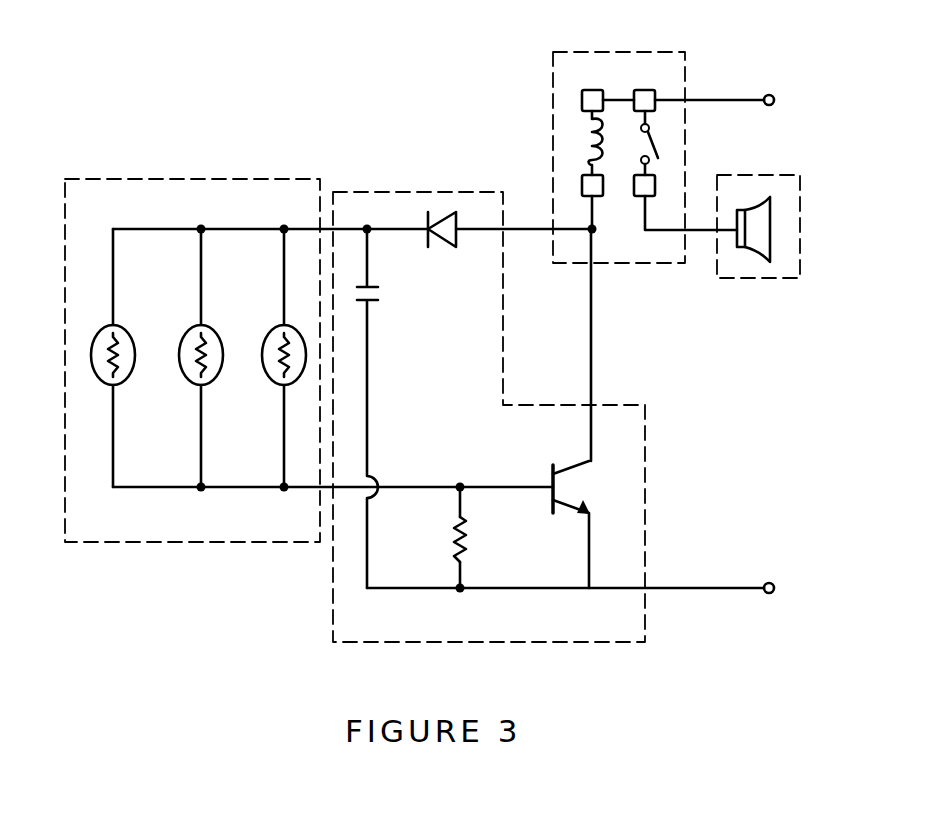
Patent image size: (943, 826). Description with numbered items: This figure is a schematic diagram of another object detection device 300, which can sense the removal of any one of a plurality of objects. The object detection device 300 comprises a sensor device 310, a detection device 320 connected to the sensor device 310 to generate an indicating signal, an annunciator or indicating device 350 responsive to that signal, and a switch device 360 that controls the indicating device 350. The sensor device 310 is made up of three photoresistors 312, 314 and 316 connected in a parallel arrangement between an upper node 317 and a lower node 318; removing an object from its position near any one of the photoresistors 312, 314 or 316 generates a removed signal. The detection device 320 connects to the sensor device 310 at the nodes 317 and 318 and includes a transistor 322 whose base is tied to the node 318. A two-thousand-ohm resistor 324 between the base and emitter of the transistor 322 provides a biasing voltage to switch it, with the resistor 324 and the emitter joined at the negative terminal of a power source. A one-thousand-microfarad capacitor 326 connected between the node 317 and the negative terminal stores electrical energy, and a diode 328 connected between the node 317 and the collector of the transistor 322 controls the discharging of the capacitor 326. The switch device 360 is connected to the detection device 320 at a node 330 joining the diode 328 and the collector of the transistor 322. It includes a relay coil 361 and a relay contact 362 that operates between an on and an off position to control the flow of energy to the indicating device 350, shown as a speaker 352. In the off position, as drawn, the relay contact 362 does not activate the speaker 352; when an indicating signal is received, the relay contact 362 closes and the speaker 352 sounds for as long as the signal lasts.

The object detection device 300 is at (762, 68).
The sensor device 310 is at (143, 543).
The photoresistor 312 is at (94, 348).
The photoresistor 314 is at (196, 330).
The photoresistor 316 is at (284, 330).
The node 317 is at (309, 228).
The node 318 is at (302, 489).
The detection device 320 is at (646, 410).
The transistor 322 is at (558, 488).
The resistor 324 is at (464, 540).
The capacitor 326 is at (379, 287).
The diode 328 is at (444, 210).
The node 330 is at (594, 340).
The indicating device 350 is at (744, 279).
The speaker 352 is at (771, 237).
The switch device 360 is at (553, 95).
The relay coil 361 is at (586, 150).
The relay contact 362 is at (653, 147).